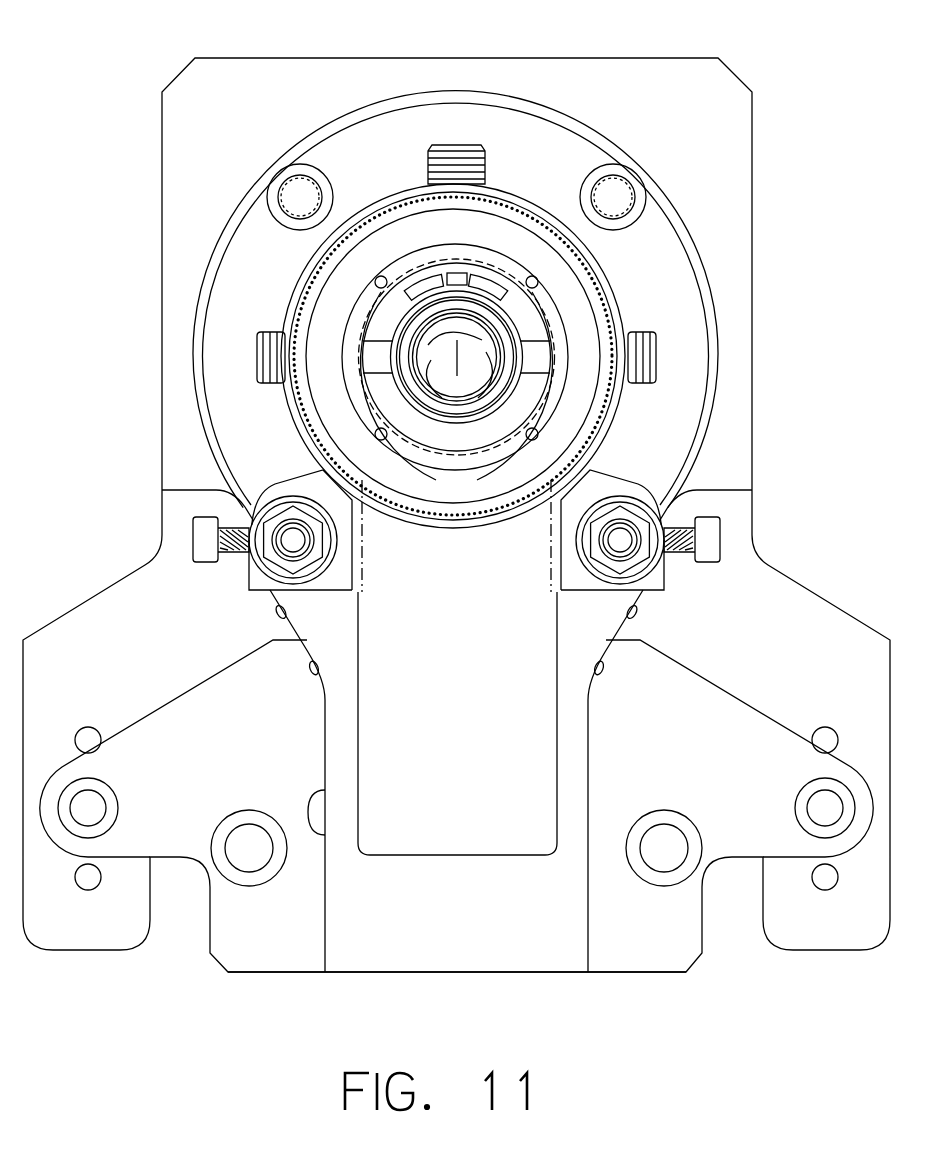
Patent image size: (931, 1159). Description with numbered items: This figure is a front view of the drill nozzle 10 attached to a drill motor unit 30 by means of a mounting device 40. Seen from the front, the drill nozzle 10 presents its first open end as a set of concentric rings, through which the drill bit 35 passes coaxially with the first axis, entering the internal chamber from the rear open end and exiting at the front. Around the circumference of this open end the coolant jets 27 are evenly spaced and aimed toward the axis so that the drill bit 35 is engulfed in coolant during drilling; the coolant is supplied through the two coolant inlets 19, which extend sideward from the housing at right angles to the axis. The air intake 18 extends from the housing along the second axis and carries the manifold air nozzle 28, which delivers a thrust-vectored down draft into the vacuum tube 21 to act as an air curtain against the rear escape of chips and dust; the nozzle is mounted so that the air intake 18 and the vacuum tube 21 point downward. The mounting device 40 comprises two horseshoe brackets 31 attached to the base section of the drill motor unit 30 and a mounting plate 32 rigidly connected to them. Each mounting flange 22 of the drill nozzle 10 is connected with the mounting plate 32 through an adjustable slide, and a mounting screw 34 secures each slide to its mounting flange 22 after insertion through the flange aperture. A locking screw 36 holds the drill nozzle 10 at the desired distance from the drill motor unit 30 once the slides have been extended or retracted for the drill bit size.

The drill nozzle 10 is at (292, 254).
The air intake 18 is at (462, 152).
The coolant inlets 19 is at (268, 357).
The vacuum tube 21 is at (395, 750).
The mounting flanges 22 is at (270, 562).
The coolant jets 27 is at (378, 285).
The manifold air nozzle 28 is at (487, 282).
The drill motor unit 30 is at (748, 60).
The horseshoe brackets 31 is at (88, 657).
The mounting plate 32 is at (442, 936).
The mounting screw 34 is at (276, 572).
The drill bit 35 is at (434, 392).
The locking screw 36 is at (190, 538).
The mounting device 40 is at (816, 580).